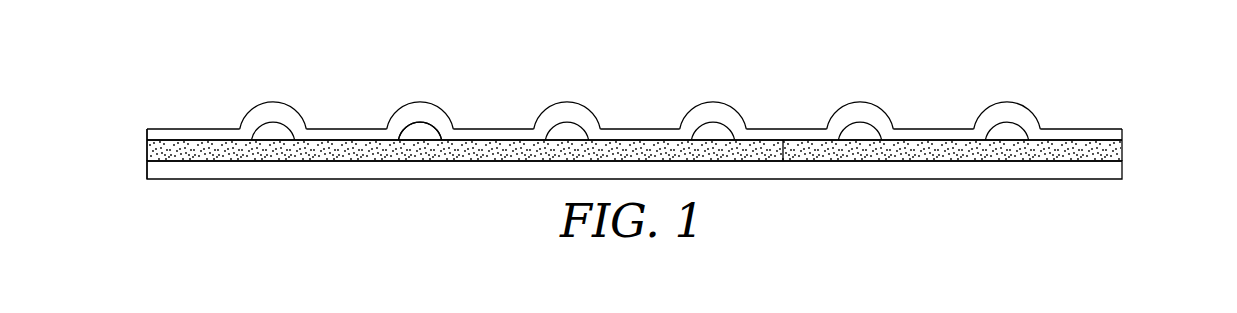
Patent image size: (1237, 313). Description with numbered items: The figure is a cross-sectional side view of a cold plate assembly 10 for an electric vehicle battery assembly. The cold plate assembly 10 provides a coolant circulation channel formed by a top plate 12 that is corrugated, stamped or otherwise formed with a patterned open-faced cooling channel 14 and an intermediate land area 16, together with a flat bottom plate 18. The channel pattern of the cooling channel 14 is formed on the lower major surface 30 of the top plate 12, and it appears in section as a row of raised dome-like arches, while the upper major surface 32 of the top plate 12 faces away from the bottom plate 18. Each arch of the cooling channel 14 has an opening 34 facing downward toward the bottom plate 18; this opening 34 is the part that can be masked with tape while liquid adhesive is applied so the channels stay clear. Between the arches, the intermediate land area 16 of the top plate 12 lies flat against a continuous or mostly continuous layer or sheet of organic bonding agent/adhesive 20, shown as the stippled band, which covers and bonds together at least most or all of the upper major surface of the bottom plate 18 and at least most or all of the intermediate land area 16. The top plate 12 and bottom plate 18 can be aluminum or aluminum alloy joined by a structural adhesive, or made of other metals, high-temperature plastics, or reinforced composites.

The cold plate assembly 10 is at (360, 63).
The top plate 12 is at (1044, 100).
The cooling channel 14 is at (865, 132).
The intermediate land area 16 is at (783, 161).
The bottom plate 18 is at (1122, 168).
The organic bonding agent/adhesive 20 is at (1122, 152).
The lower major surface 30 is at (163, 141).
The upper major surface 32 is at (205, 128).
The opening 34 is at (423, 135).